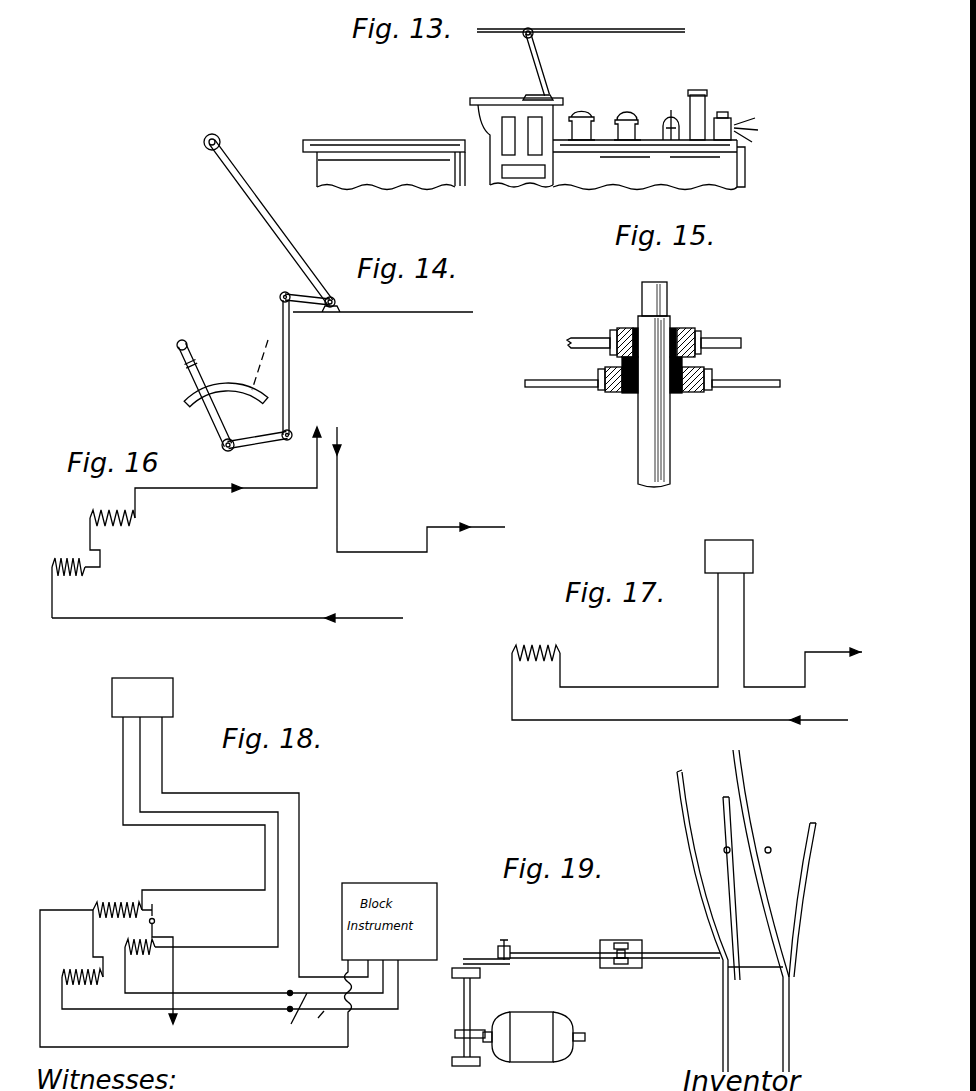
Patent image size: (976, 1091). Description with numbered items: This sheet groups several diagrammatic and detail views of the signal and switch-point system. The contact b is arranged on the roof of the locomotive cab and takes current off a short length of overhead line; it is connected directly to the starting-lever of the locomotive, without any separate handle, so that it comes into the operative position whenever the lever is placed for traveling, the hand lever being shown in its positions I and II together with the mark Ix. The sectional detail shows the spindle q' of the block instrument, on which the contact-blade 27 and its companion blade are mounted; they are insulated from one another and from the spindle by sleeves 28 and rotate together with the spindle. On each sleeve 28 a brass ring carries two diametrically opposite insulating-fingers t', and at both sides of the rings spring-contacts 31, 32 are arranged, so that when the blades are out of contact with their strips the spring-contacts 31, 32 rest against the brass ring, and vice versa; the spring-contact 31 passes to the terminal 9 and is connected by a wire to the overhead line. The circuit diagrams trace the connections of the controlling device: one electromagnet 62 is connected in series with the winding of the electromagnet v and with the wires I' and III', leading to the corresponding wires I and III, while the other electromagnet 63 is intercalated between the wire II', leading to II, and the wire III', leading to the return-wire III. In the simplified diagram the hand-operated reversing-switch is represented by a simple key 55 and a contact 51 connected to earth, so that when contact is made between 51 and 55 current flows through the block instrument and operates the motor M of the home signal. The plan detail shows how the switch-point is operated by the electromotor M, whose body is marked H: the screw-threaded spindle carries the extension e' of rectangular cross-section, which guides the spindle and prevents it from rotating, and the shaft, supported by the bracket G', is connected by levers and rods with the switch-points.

In FIG. 13, the contact b is at (542, 70).
In FIG. 14, the contact b is at (278, 223).
In FIG. 14, the wire I is at (198, 384).
In FIG. 18, the wire I is at (318, 1025).
In FIG. 14, the wire II is at (226, 362).
In FIG. 18, the wire II is at (293, 1017).
In FIG. 14, the lever position Ix is at (212, 426).
In FIG. 16, the wire I' is at (227, 543).
In FIG. 18, the wire I' is at (194, 882).
In FIG. 16, the wire III' is at (419, 490).
In FIG. 17, the wire III' is at (803, 630).
In FIG. 18, the wire III' is at (265, 847).
In FIG. 17, the wire II' is at (680, 648).
In FIG. 18, the wire II' is at (211, 962).
In FIG. 16, the electromagnet v is at (112, 507).
In FIG. 18, the electromagnet v is at (117, 900).
In FIG. 16, the electromagnet 62 is at (68, 582).
In FIG. 18, the electromagnet 62 is at (228, 961).
In FIG. 17, the electromagnet 63 is at (536, 642).
In FIG. 18, the electromagnet 63 is at (246, 856).
In FIG. 15, the spindle q' is at (668, 384).
In FIG. 15, the insulating sleeves 28 is at (676, 394).
In FIG. 15, the insulating-finger t' is at (616, 326).
In FIG. 15, the spring-contact 31 is at (580, 334).
In FIG. 15, the spring-contact 32 is at (742, 343).
In FIG. 15, the contact-blade 27 is at (548, 387).
In FIG. 17, the motor M is at (729, 545).
In FIG. 18, the motor M is at (142, 686).
In FIG. 19, the motor M is at (515, 1012).
In FIG. 18, the key 55 is at (160, 906).
In FIG. 18, the contact 51 is at (165, 968).
In FIG. 18, the return-wire III is at (310, 966).
In FIG. 19, the terminal 9 is at (460, 1040).
In FIG. 19, the motor armature H is at (532, 1037).
In FIG. 19, the bracket G' is at (497, 999).
In FIG. 19, the extension e' is at (494, 1059).